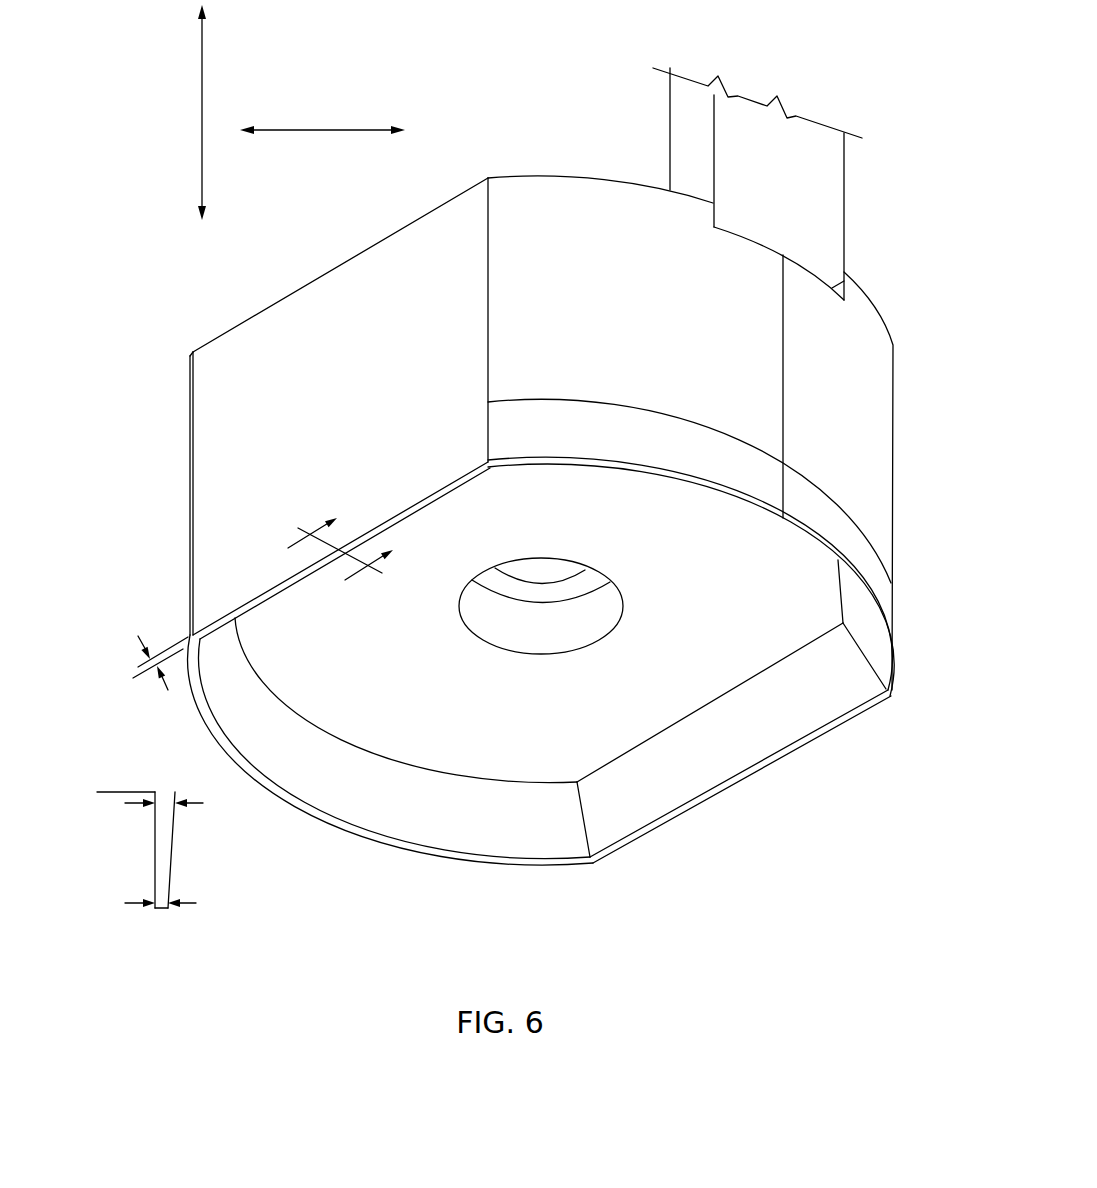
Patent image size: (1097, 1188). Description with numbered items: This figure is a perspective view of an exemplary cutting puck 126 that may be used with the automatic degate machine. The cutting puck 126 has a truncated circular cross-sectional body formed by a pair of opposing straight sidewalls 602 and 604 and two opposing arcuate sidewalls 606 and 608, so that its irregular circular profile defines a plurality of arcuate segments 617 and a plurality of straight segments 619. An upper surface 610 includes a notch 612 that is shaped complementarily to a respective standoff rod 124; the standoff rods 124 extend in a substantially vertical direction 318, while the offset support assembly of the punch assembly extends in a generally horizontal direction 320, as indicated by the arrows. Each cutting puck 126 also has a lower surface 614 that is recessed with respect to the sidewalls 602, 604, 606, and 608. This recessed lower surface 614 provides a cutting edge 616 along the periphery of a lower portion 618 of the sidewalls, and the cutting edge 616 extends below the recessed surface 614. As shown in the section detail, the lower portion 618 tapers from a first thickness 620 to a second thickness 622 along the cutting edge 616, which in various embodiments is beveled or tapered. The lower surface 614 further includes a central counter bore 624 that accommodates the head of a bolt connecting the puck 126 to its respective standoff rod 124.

The standoff rod 124 is at (757, 192).
The cutting puck 126 is at (598, 160).
The vertical direction 318 is at (202, 173).
The horizontal direction 320 is at (353, 130).
The straight sidewall 602 is at (322, 430).
The straight sidewall 604 is at (705, 797).
The arcuate sidewall 606 is at (622, 334).
The arcuate sidewall 608 is at (347, 834).
The upper surface 610 is at (348, 254).
The notch 612 is at (713, 217).
The lower surface 614 is at (522, 725).
The cutting edge 616 is at (690, 491).
The arcuate segment 617 is at (858, 437).
The lower portion 618 is at (597, 471).
The straight segment 619 is at (242, 492).
The first thickness 620 is at (200, 804).
The second thickness 622 is at (168, 684).
The central counter bore 624 is at (562, 632).